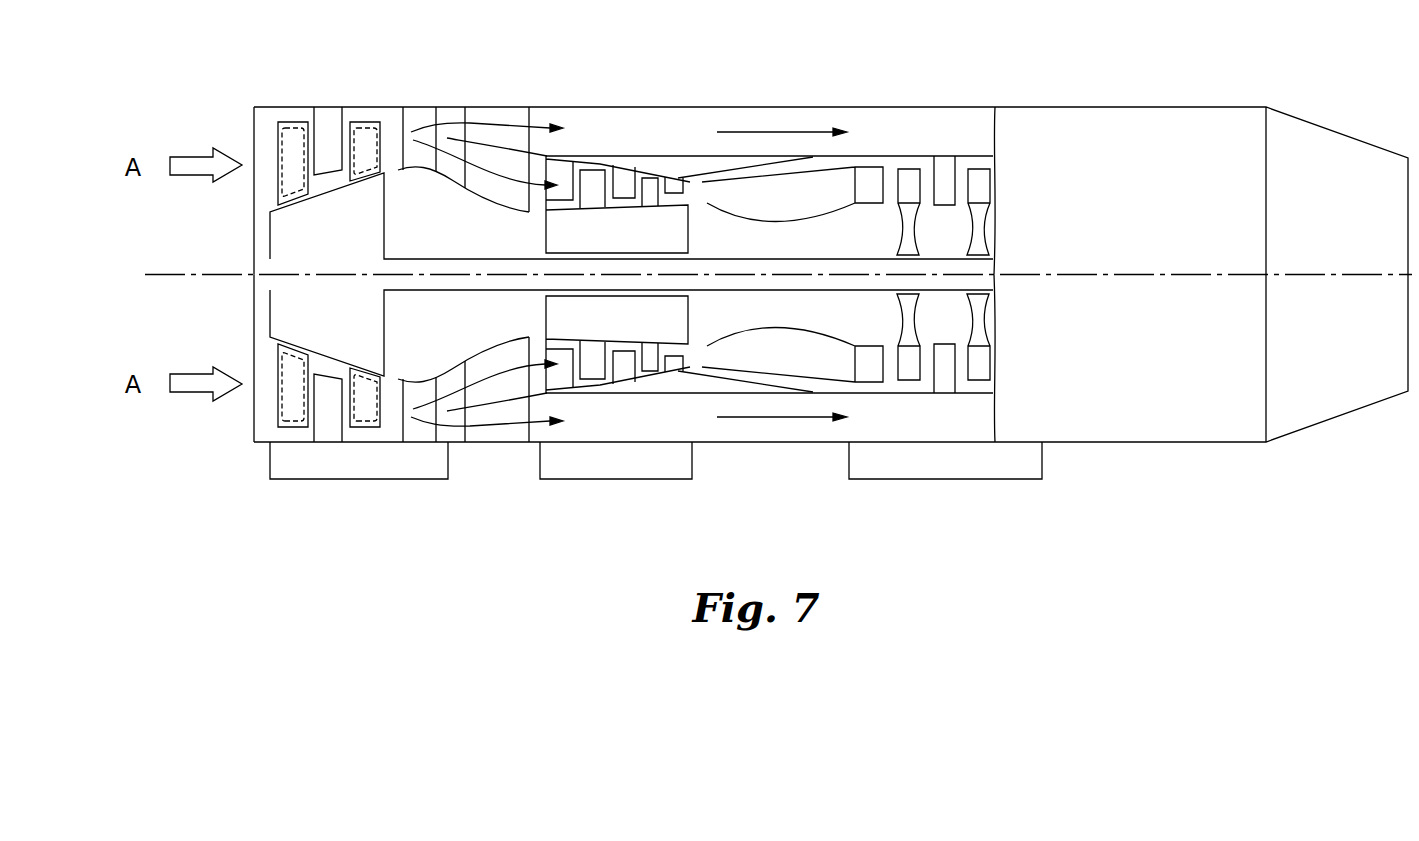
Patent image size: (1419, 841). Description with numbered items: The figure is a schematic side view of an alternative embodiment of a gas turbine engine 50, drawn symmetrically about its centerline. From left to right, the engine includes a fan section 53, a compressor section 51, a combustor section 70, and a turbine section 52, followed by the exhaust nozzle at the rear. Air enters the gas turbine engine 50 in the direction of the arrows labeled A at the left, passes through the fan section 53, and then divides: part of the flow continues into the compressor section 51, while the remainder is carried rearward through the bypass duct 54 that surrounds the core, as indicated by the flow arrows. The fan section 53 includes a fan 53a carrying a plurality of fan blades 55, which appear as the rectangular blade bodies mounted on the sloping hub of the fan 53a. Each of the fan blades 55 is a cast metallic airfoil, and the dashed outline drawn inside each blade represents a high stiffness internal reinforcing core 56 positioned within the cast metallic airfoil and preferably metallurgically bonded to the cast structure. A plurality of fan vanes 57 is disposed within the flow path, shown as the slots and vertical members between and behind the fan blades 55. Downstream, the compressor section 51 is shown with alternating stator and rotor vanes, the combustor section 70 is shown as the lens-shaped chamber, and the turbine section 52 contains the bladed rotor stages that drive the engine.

The gas turbine engine 50 is at (741, 64).
The compressor section 51 is at (632, 462).
The turbine section 52 is at (917, 462).
The fan section 53 is at (415, 462).
The fan 53a is at (283, 242).
The bypass duct 54 is at (686, 133).
The fan blades 55 is at (292, 133).
The high stiffness internal reinforcing core 56 is at (290, 413).
The fan vanes 57 is at (330, 113).
The combustor section 70 is at (773, 355).